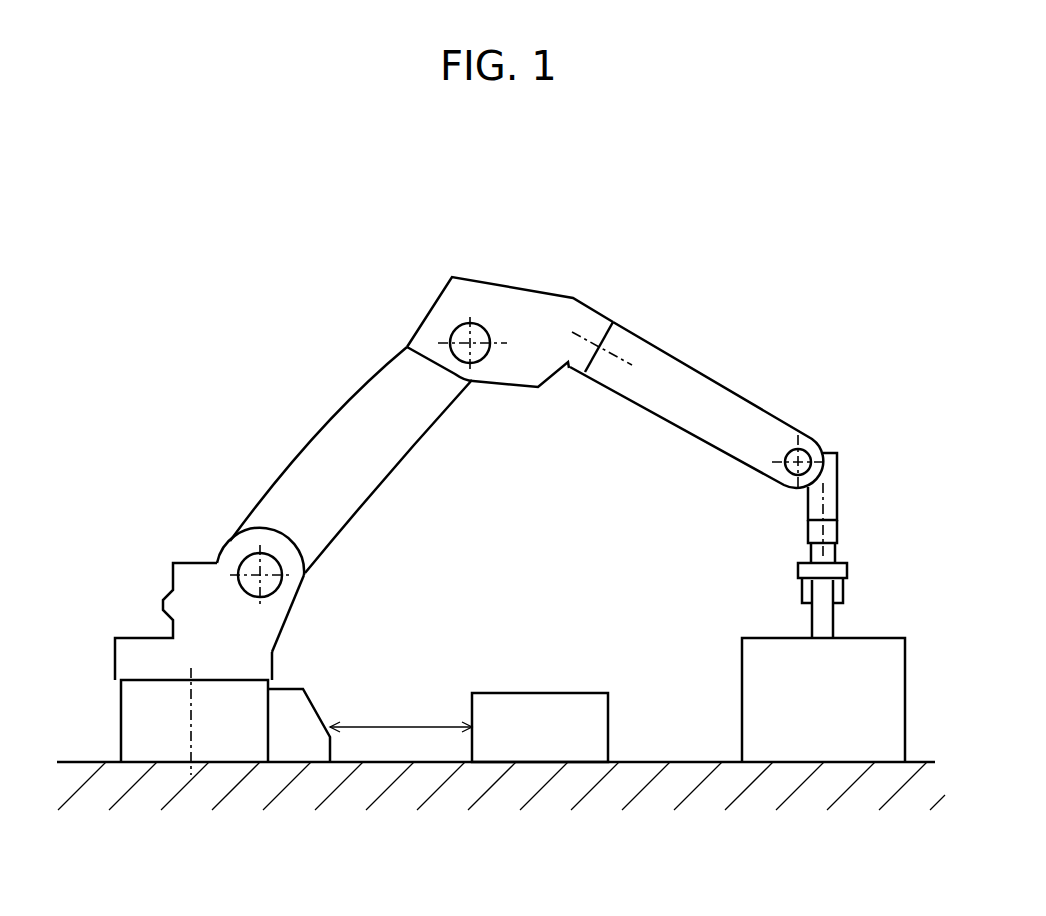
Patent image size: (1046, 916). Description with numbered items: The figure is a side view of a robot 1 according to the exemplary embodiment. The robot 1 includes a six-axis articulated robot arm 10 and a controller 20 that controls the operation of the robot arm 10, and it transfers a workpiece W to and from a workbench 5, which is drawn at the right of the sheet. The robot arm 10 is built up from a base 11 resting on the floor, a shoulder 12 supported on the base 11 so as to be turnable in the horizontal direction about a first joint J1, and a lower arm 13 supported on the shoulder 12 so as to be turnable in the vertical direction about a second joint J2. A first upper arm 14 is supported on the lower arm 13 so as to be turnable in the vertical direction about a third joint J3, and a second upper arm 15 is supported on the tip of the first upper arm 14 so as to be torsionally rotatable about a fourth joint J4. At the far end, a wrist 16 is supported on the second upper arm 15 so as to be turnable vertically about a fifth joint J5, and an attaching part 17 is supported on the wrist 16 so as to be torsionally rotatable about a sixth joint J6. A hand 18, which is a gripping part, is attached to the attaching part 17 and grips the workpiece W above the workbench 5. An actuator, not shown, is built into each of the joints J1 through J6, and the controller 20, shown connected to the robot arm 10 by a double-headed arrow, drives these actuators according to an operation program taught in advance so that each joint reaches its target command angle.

The robot 1 is at (303, 282).
The robot arm 10 is at (213, 486).
The base 11 is at (121, 748).
The shoulder 12 is at (160, 601).
The lower arm 13 is at (318, 433).
The first upper arm 14 is at (493, 278).
The second upper arm 15 is at (688, 367).
The wrist 16 is at (837, 486).
The attaching part 17 is at (837, 534).
The hand 18 is at (847, 572).
The controller 20 is at (553, 692).
The workbench 5 is at (742, 727).
The workpiece W is at (833, 627).
The first joint J1 is at (183, 710).
The second joint J2 is at (240, 577).
The third joint J3 is at (468, 330).
The fourth joint J4 is at (622, 355).
The fifth joint J5 is at (806, 452).
The sixth joint J6 is at (818, 530).